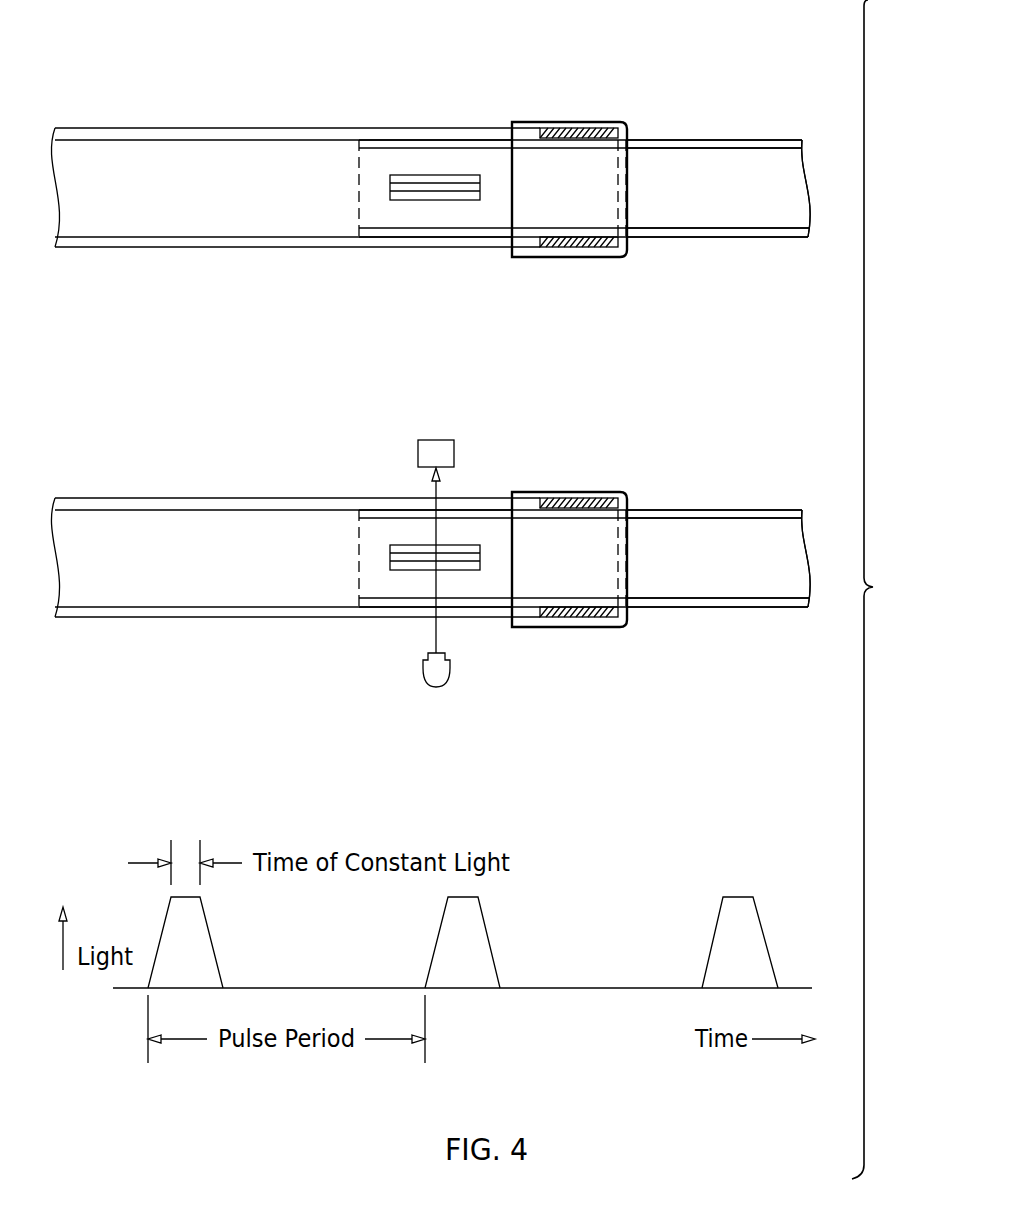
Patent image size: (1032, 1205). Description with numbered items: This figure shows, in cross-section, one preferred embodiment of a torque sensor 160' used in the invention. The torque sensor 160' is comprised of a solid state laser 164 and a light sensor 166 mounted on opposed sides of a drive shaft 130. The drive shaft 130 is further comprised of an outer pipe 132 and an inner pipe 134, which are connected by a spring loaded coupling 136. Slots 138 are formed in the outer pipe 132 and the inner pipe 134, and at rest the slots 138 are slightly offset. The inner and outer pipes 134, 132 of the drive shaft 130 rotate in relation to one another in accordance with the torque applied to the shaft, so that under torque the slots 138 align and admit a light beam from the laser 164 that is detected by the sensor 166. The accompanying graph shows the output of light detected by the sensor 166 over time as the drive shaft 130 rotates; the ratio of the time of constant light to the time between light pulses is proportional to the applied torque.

The drive shaft 130 is at (692, 132).
The outer pipe 132 is at (167, 237).
The inner pipe 134 is at (755, 148).
The spring loaded coupling 136 is at (536, 130).
The slots 138 is at (417, 175).
The torque sensor 160' is at (888, 589).
The solid state laser 164 is at (445, 677).
The light sensor 166 is at (418, 452).